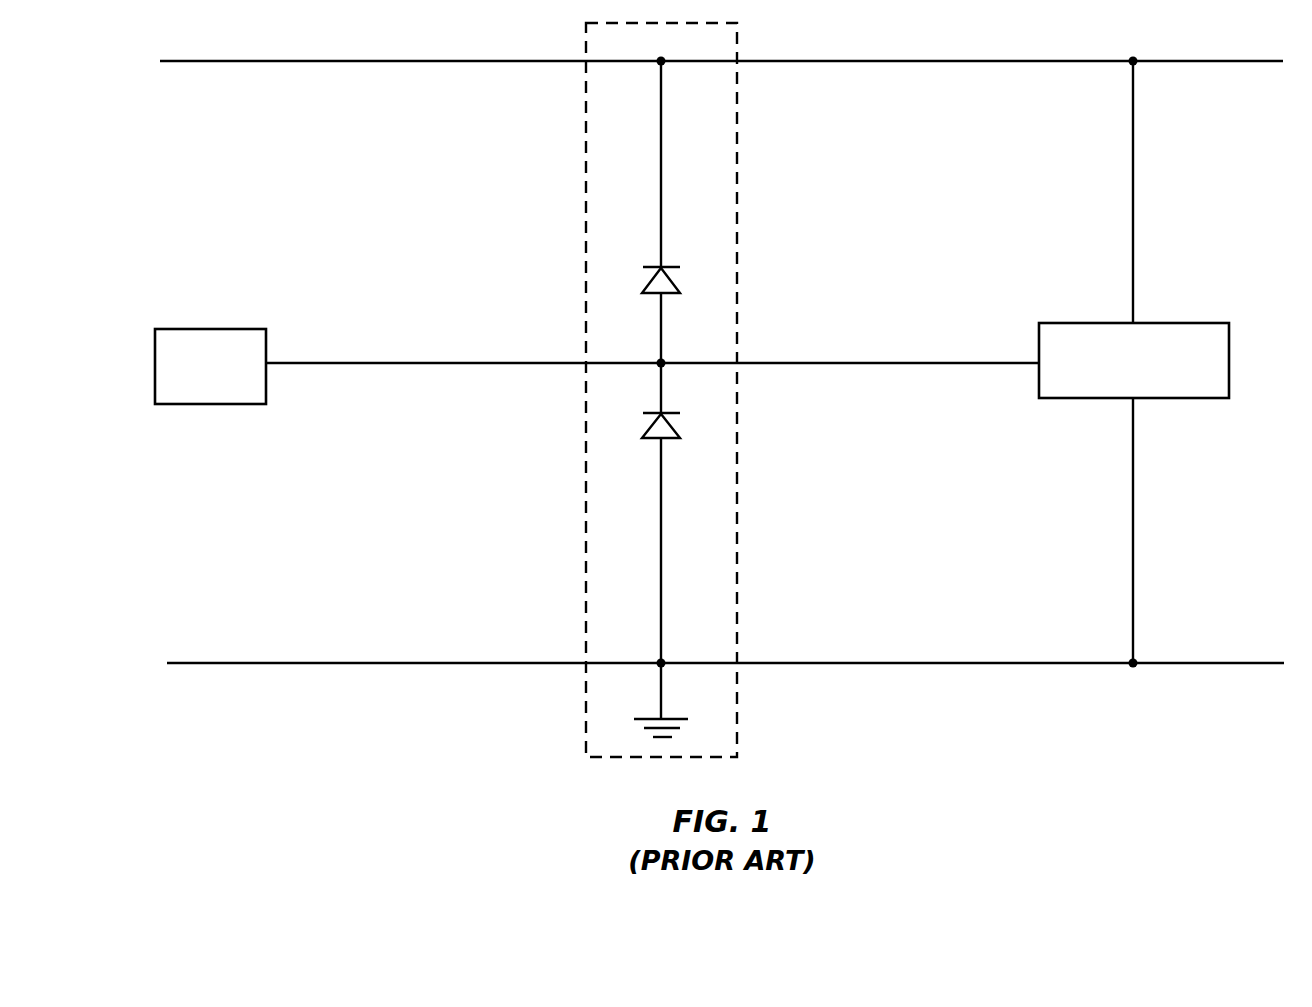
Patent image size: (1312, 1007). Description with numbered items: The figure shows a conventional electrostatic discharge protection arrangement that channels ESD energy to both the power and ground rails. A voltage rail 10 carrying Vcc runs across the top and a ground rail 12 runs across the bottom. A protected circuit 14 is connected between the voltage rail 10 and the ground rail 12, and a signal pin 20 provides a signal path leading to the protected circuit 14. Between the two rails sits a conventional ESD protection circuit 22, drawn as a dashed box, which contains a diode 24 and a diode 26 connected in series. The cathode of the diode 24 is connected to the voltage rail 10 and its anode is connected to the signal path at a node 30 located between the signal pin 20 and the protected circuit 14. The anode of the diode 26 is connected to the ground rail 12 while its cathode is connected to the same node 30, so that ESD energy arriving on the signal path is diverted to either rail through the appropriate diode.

The voltage rail 10 is at (300, 61).
The ground rail 12 is at (287, 663).
The protected circuit 14 is at (1183, 323).
The signal pin 20 is at (240, 329).
The conventional ESD protection circuit 22 is at (737, 160).
The diode 24 is at (677, 287).
The diode 26 is at (677, 432).
The node 30 is at (684, 346).